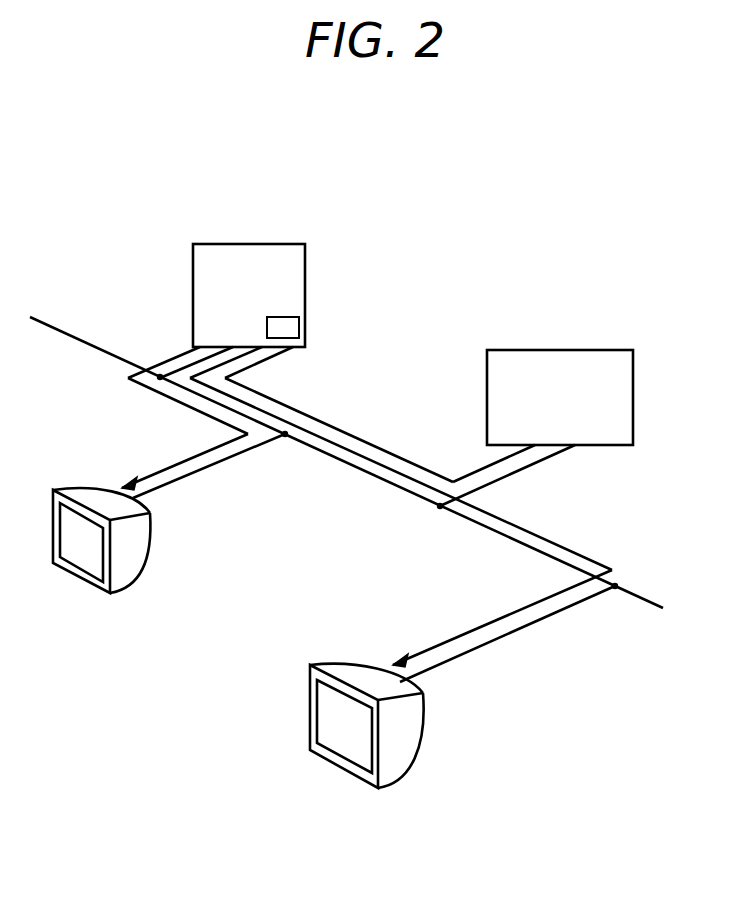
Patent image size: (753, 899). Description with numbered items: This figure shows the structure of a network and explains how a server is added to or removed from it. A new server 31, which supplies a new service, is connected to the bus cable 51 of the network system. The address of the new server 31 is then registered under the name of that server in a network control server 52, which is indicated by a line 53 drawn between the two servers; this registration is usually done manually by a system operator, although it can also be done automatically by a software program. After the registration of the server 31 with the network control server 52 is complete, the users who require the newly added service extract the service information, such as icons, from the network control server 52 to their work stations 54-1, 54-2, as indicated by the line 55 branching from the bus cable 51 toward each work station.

The new server 31 is at (637, 382).
The bus cable 51 is at (86, 344).
The network control server 52 is at (306, 274).
The line 53 is at (313, 415).
The work station 54-1 is at (150, 542).
The work station 54-2 is at (423, 727).
The line 55 is at (148, 387).